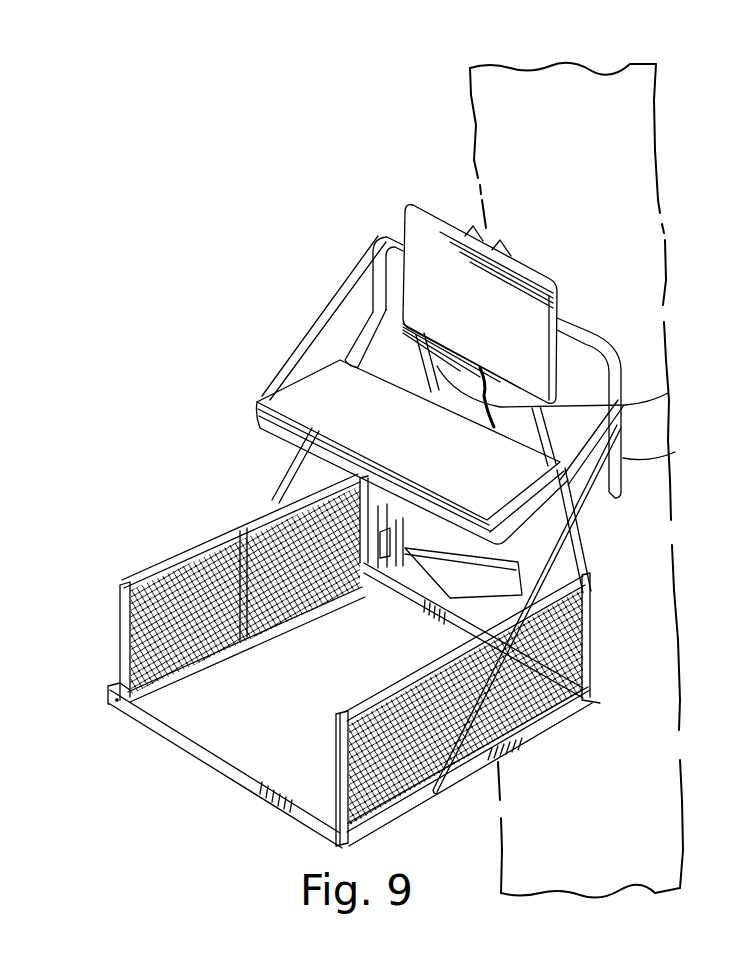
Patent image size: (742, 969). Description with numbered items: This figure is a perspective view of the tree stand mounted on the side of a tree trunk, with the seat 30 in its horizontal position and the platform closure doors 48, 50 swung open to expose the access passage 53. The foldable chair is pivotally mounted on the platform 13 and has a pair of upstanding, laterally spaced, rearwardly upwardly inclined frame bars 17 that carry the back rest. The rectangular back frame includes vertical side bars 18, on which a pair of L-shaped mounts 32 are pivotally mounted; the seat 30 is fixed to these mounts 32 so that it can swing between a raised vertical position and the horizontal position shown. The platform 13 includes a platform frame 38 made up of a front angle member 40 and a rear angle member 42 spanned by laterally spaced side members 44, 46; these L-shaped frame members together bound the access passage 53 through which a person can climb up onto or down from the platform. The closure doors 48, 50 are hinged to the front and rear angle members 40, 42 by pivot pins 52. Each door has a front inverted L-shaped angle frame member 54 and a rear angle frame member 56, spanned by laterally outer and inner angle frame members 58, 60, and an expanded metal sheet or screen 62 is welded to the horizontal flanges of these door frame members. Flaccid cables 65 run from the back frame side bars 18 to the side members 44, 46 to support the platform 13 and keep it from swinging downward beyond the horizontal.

The platform 13 is at (172, 821).
The frame bars 17 is at (668, 393).
The vertical side bars 18 is at (675, 452).
The seat 30 is at (404, 178).
The L-shaped mounts 32 is at (367, 340).
The platform frame 38 is at (280, 832).
The front angle member 40 is at (167, 737).
The rear angle member 42 is at (408, 600).
The side member 44 is at (183, 683).
The side member 46 is at (405, 803).
The platform closure door 48 is at (154, 516).
The platform closure door 50 is at (606, 612).
The pivot pins 52 is at (338, 830).
The access passage 53 is at (249, 751).
The front inverted L-shaped angle frame member 54 is at (122, 619).
The rear inverted L-shaped angle frame member 56 is at (369, 520).
The laterally outer inverted L-shaped angle frame member 58 is at (277, 620).
The laterally inner inverted L-shaped angle frame member 60 is at (208, 540).
The expanded metal sheet or screen 62 is at (160, 575).
The flaccid cables 65 is at (280, 477).